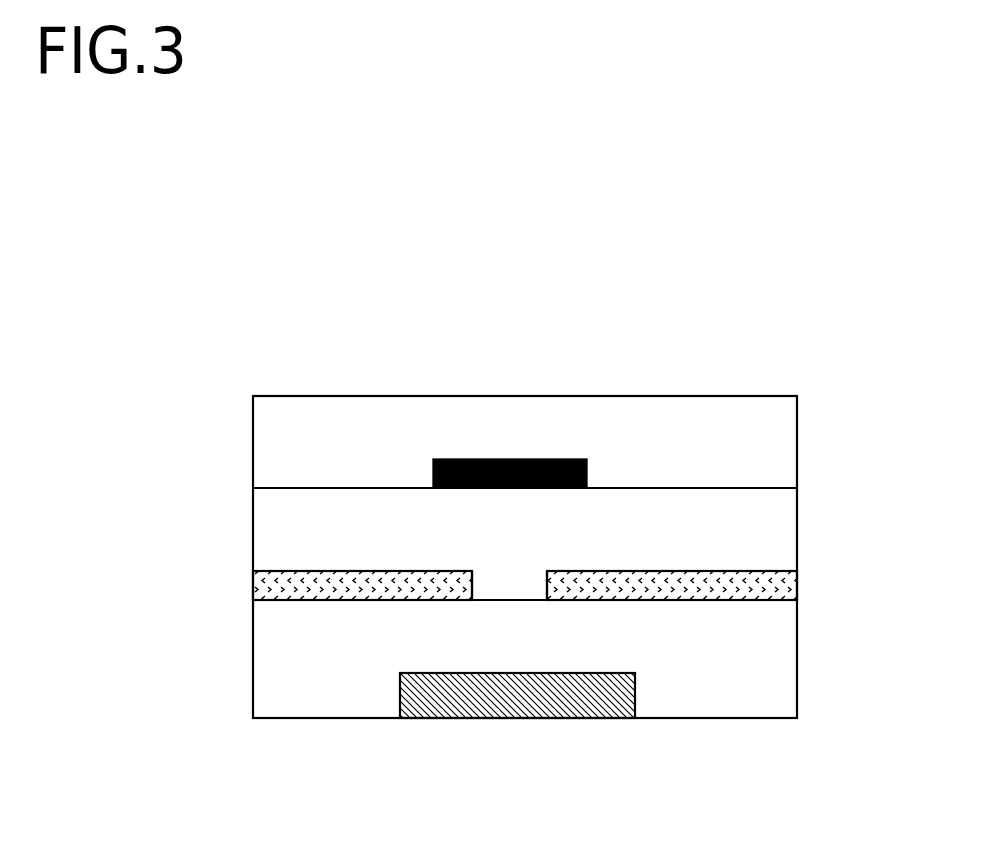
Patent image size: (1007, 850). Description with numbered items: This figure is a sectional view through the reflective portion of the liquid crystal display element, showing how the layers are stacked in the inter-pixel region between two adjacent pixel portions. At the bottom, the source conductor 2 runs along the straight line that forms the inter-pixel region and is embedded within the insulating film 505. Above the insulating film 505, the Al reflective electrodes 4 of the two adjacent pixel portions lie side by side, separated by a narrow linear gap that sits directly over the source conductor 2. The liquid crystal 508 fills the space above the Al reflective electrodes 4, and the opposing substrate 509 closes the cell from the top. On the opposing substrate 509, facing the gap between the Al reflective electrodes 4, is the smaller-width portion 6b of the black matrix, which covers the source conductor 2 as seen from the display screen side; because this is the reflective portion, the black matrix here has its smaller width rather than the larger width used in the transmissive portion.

The source conductor 2 is at (525, 705).
The Al reflective electrode 4 is at (768, 589).
The smaller-width portion 6b is at (517, 459).
The insulating film 505 is at (770, 669).
The liquid crystal 508 is at (768, 533).
The opposing substrate 509 is at (760, 444).